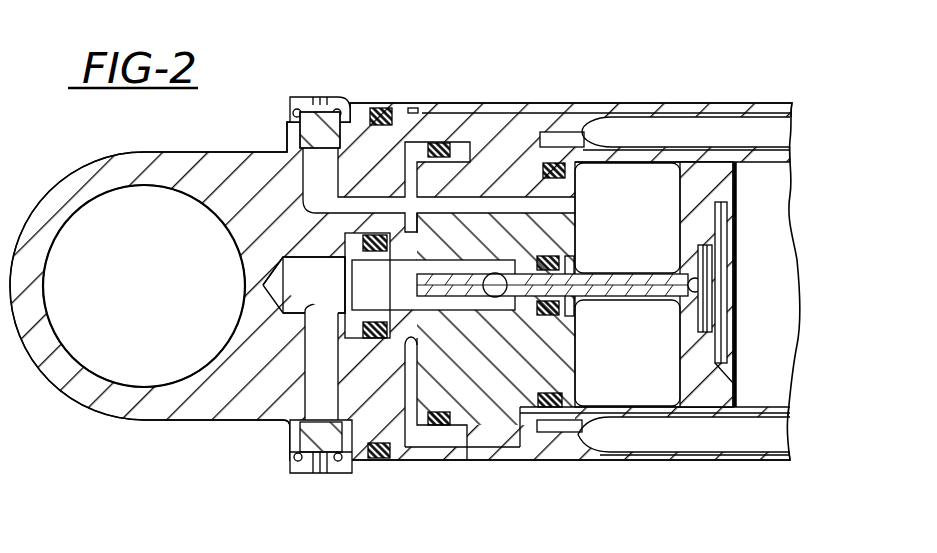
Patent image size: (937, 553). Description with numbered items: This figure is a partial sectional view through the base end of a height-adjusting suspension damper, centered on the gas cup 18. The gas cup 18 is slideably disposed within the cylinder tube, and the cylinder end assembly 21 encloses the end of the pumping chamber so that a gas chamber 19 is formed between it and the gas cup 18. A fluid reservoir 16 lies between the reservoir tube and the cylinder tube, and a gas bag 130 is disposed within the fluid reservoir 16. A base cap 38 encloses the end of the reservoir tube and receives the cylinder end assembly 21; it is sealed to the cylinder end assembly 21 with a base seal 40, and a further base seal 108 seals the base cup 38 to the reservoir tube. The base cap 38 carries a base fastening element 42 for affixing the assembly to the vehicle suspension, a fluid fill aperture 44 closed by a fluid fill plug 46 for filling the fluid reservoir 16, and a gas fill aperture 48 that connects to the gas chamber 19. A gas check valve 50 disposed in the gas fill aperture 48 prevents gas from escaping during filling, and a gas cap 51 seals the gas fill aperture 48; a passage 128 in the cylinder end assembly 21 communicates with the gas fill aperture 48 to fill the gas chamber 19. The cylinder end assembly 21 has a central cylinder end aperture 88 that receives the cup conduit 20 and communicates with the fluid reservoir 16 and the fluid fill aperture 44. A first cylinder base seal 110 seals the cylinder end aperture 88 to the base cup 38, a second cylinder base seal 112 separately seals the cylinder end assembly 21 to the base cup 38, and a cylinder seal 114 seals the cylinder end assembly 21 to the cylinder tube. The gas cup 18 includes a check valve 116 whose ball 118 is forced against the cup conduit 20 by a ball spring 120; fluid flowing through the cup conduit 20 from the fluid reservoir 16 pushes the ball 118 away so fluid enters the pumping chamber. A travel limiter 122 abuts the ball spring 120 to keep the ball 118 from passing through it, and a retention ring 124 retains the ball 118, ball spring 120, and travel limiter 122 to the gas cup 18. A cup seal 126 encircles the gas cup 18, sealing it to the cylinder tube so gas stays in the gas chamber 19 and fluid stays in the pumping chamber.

The fluid reservoir 16 is at (567, 443).
The gas cup 18 is at (742, 393).
The gas chamber 19 is at (633, 211).
The cup conduit 20 is at (615, 300).
The cylinder end assembly 21 is at (505, 440).
The base cap 38 is at (297, 110).
The base seal 40 is at (425, 430).
The base fastening element 42 is at (110, 415).
The fluid fill aperture 44 is at (308, 402).
The fluid fill plug 46 is at (300, 475).
The gas fill aperture 48 is at (312, 178).
The gas check valve 50 is at (352, 103).
The gas cap 51 is at (297, 97).
The central cylinder end aperture 88 is at (368, 302).
The base seal 108 is at (382, 108).
The first cylinder base seal 110 is at (350, 268).
The second cylinder base seal 112 is at (445, 140).
The cylinder seal 114 is at (553, 407).
The check valve 116 is at (738, 275).
The ball 118 is at (705, 288).
The ball spring 120 is at (682, 327).
The travel limiter 122 is at (718, 265).
The retention ring 124 is at (708, 323).
The cup seal 126 is at (700, 405).
The passage 128 is at (487, 195).
The gas bag 130 is at (628, 135).